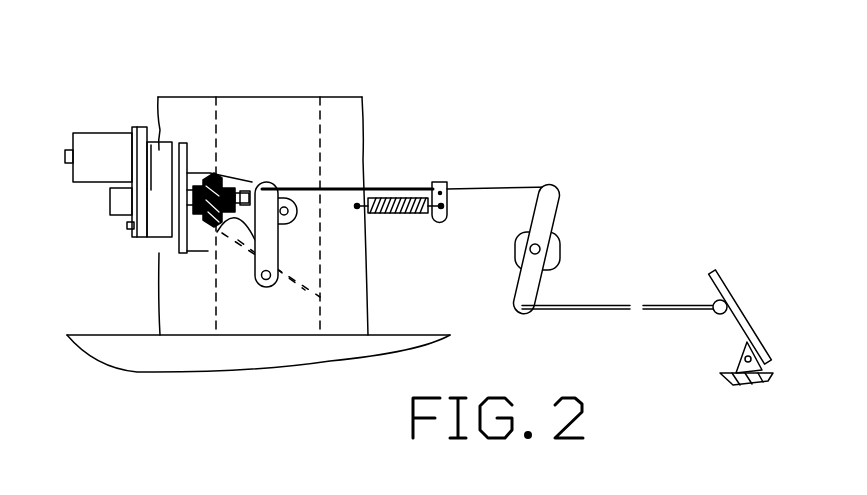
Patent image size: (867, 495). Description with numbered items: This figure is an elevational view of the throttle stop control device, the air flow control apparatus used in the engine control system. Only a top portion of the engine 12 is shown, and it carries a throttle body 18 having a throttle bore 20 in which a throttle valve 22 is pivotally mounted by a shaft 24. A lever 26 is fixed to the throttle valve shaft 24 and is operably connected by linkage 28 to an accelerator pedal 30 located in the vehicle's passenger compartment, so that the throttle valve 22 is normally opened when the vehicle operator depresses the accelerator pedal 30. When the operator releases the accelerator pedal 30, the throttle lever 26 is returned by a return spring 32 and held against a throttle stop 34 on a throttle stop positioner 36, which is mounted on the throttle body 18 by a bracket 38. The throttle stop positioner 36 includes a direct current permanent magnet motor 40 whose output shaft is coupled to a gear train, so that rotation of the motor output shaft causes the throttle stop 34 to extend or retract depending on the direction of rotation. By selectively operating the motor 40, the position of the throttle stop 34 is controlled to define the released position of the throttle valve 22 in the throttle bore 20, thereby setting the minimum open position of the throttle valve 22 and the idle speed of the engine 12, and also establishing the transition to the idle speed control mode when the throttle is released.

The engine 12 is at (278, 352).
The throttle body 18 is at (353, 152).
The throttle bore 20 is at (320, 118).
The throttle valve 22 is at (305, 260).
The shaft 24 is at (260, 285).
The lever 26 is at (240, 242).
The linkage 28 is at (500, 188).
The accelerator pedal 30 is at (732, 292).
The return spring 32 is at (392, 215).
The throttle stop 34 is at (247, 182).
The throttle stop positioner 36 is at (124, 237).
The bracket 38 is at (199, 246).
The direct current permanent magnet motor 40 is at (118, 124).